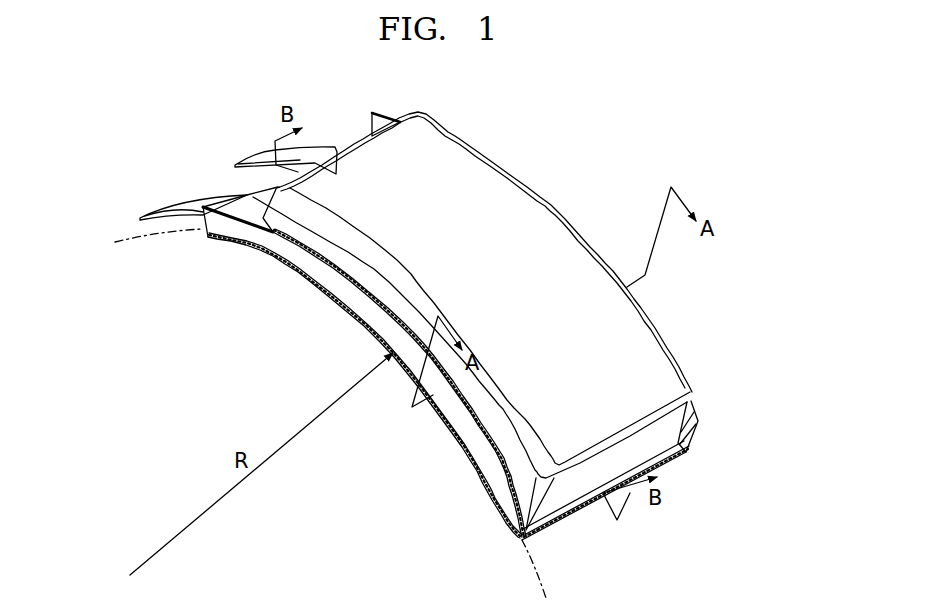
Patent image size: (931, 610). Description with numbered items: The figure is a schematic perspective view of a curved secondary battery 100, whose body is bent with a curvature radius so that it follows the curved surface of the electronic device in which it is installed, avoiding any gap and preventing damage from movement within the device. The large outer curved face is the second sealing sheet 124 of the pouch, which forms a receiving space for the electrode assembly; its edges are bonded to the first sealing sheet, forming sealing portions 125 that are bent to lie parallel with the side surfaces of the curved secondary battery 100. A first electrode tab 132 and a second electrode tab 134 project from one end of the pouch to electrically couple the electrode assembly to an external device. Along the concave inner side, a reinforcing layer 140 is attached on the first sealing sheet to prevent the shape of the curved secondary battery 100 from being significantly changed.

The curved secondary battery 100 is at (709, 110).
The second sealing sheet 124 is at (553, 237).
The sealing portion 125 is at (698, 416).
The first electrode tab 132 is at (250, 157).
The second electrode tab 134 is at (152, 216).
The reinforcing layer 140 is at (475, 462).